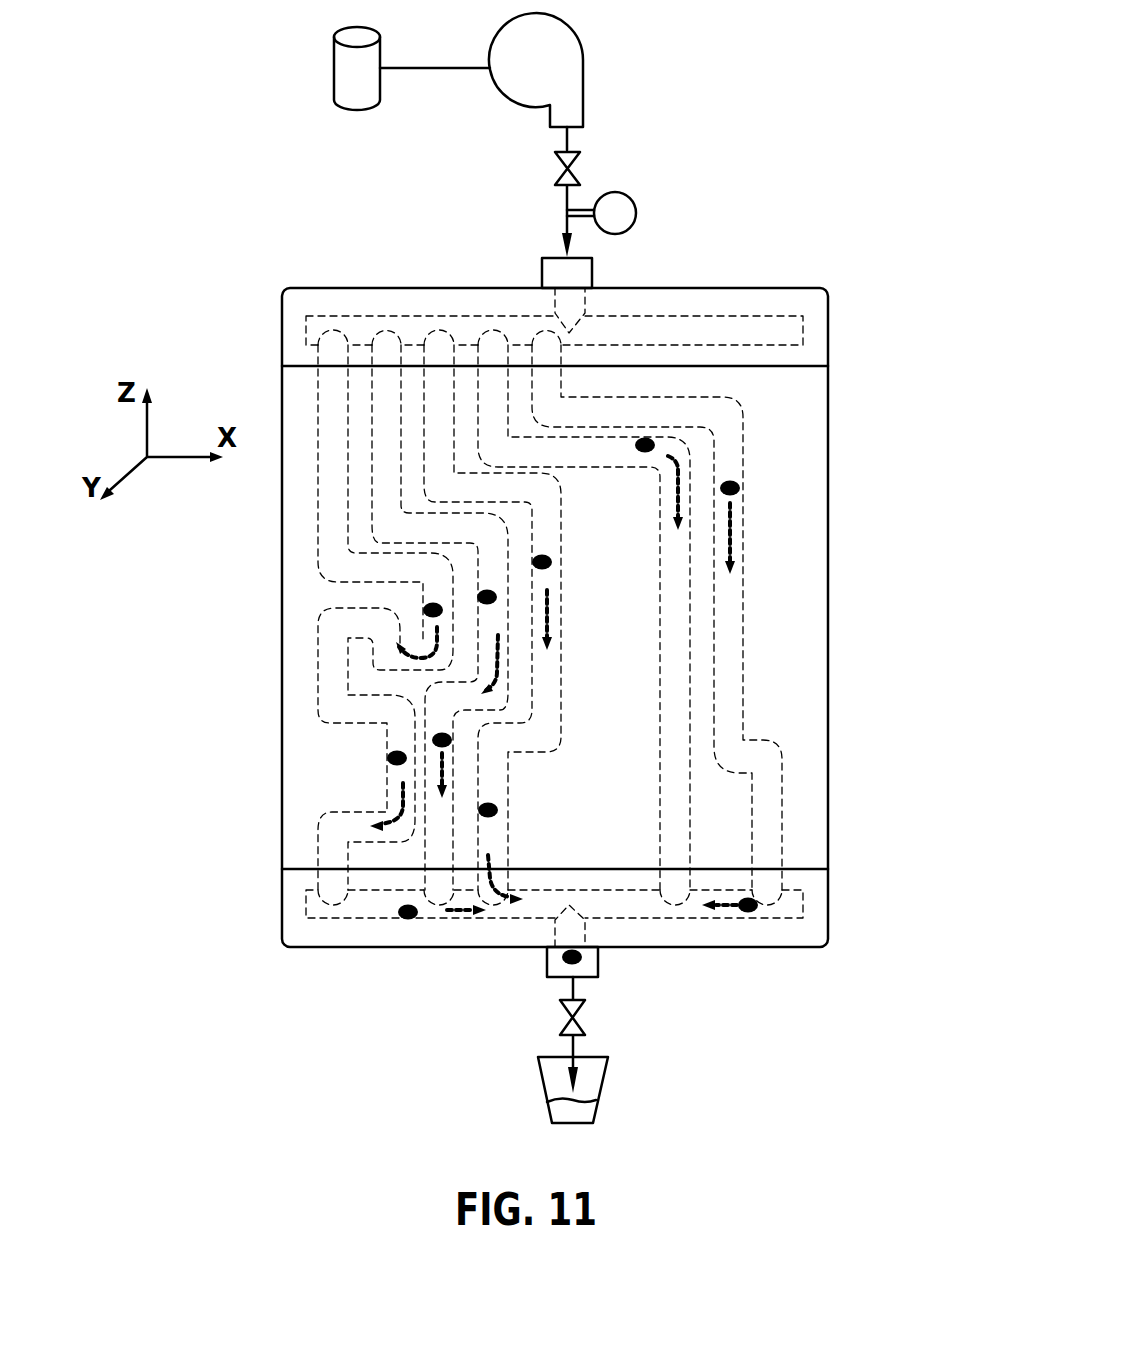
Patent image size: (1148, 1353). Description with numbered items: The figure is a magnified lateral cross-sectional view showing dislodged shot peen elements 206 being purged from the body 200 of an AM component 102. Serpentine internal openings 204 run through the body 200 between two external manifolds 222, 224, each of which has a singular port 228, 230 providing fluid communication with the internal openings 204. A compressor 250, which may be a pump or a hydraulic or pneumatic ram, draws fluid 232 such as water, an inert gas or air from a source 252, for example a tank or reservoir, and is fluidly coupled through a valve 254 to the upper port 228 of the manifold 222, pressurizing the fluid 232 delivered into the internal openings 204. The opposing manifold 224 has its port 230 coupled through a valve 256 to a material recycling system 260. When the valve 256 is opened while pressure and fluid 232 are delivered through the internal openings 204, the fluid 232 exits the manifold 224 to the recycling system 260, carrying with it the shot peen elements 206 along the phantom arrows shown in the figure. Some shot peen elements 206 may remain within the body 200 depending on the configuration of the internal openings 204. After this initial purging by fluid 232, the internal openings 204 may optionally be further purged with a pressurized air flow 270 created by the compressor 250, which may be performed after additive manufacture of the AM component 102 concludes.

The AM component 102 is at (724, 272).
The body 200 is at (554, 607).
The internal openings 204 is at (333, 671).
The shot peen elements 206 is at (425, 610).
The manifold 222 is at (826, 330).
The manifold 224 is at (826, 891).
The port 228 is at (555, 270).
The port 230 is at (548, 970).
The fluid 232 is at (528, 204).
The pressurized air flow 270 is at (565, 198).
The compressor 250 is at (578, 88).
The source 252 is at (352, 76).
The valve 254 is at (578, 163).
The valve 256 is at (562, 1022).
The recycling system 260 is at (545, 1085).